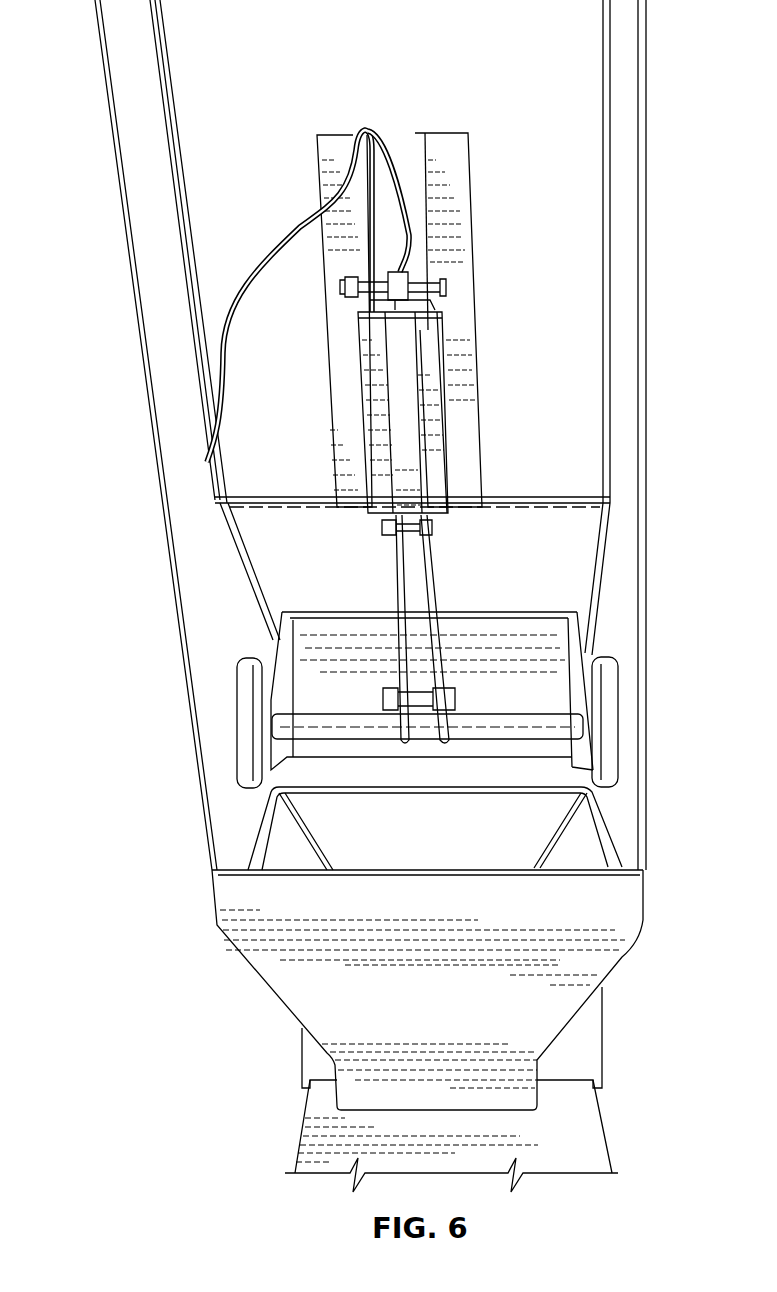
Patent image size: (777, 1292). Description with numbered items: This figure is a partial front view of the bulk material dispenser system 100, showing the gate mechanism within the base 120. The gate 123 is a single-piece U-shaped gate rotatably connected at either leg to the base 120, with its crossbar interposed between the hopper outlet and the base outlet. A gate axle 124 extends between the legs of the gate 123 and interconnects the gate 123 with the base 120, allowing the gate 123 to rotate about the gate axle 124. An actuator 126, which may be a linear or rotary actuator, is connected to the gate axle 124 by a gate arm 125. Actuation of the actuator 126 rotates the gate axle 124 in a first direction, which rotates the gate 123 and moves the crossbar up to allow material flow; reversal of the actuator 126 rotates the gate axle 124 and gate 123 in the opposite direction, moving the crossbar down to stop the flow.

The system 100 is at (130, 655).
The base 120 is at (450, 1003).
The gate 123 is at (541, 633).
The gate axle 124 is at (562, 725).
The gate arm 125 is at (433, 571).
The actuator 126 is at (402, 367).